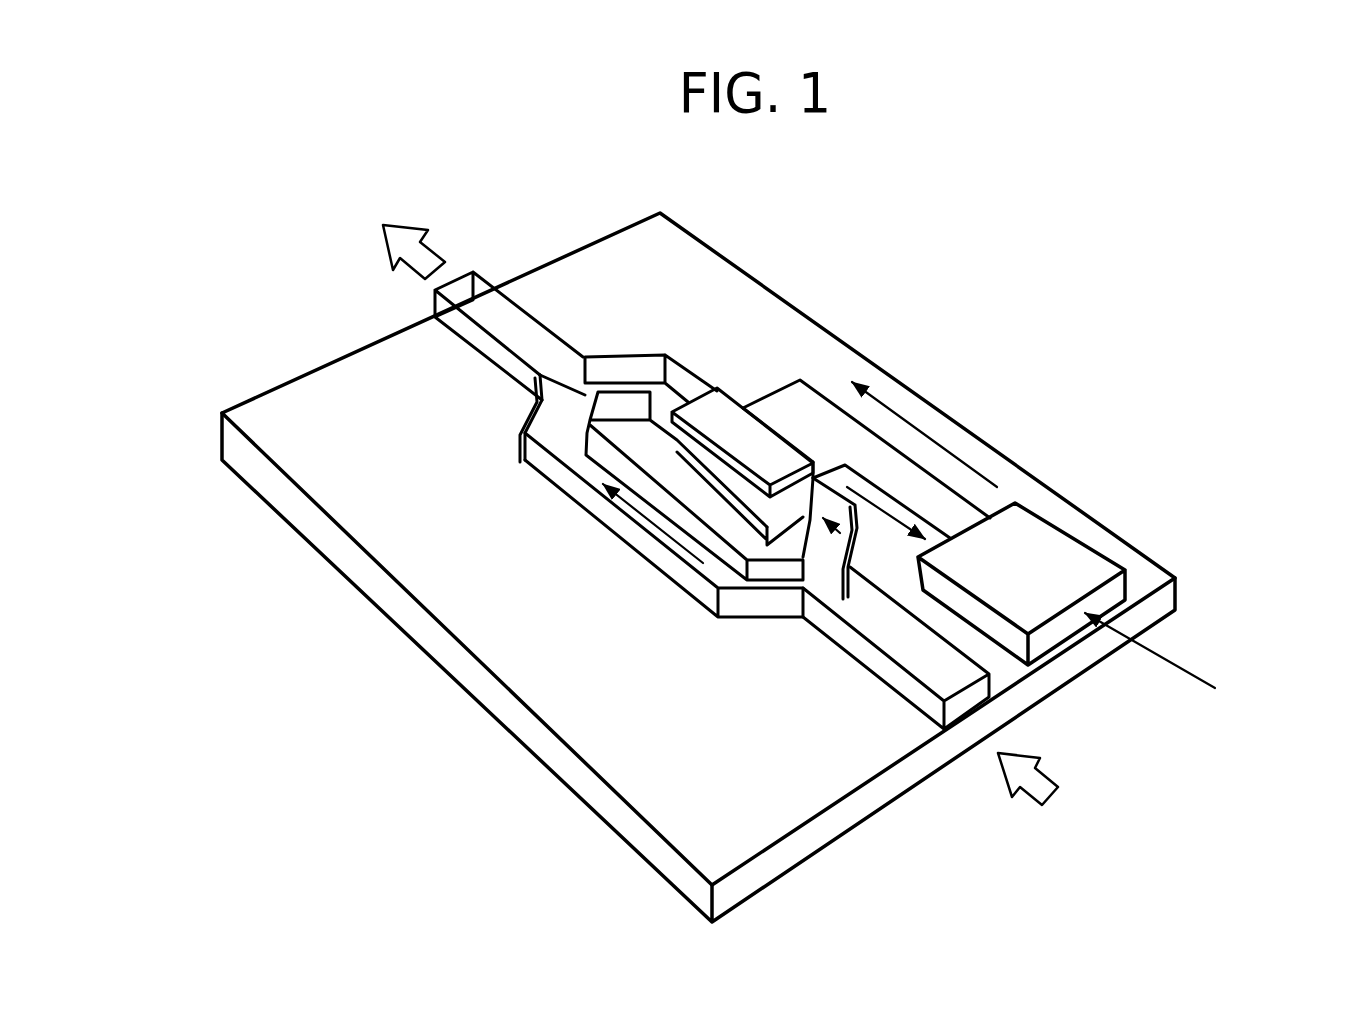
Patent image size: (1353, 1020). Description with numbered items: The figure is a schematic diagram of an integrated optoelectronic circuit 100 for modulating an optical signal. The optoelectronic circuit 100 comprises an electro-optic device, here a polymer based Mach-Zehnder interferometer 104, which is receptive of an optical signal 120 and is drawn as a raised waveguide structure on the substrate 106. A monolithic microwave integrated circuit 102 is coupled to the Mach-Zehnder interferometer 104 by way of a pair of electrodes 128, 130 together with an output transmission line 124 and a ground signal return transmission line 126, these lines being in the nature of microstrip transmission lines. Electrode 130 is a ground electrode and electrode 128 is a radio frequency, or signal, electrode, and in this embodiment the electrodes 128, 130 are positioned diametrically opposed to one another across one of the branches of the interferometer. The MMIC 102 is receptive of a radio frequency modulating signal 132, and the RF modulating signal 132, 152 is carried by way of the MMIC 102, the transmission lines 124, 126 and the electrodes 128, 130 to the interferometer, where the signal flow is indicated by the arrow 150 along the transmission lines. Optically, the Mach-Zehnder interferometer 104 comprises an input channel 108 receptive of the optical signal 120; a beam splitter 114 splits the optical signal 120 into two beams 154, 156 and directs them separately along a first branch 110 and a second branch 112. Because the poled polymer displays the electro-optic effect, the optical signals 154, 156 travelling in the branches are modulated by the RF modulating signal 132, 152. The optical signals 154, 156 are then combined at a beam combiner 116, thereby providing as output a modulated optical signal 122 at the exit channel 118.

The integrated optoelectronic circuit 100 is at (320, 748).
The monolithic microwave integrated circuit 102 is at (1050, 557).
The Mach-Zehnder interferometer 104 is at (434, 466).
The substrate 106 is at (404, 545).
The input channel 108 is at (940, 705).
The first branch 110 is at (535, 480).
The second branch 112 is at (663, 355).
The beam splitter 114 is at (810, 612).
The beam combiner 116 is at (545, 375).
The exit channel 118 is at (510, 340).
The optical signal 120 is at (1050, 772).
The modulated optical signal 122 is at (417, 273).
The output transmission line 124 is at (817, 390).
The ground signal return transmission line 126 is at (960, 430).
The signal electrode 128 is at (732, 407).
The ground electrode 130 is at (682, 455).
The radio frequency modulating signal 132 is at (1178, 675).
The signal path arrow 150 is at (868, 512).
The RF modulating signal 152 is at (993, 463).
The optical signal beam 154 is at (828, 523).
The optical signal beam 156 is at (635, 517).